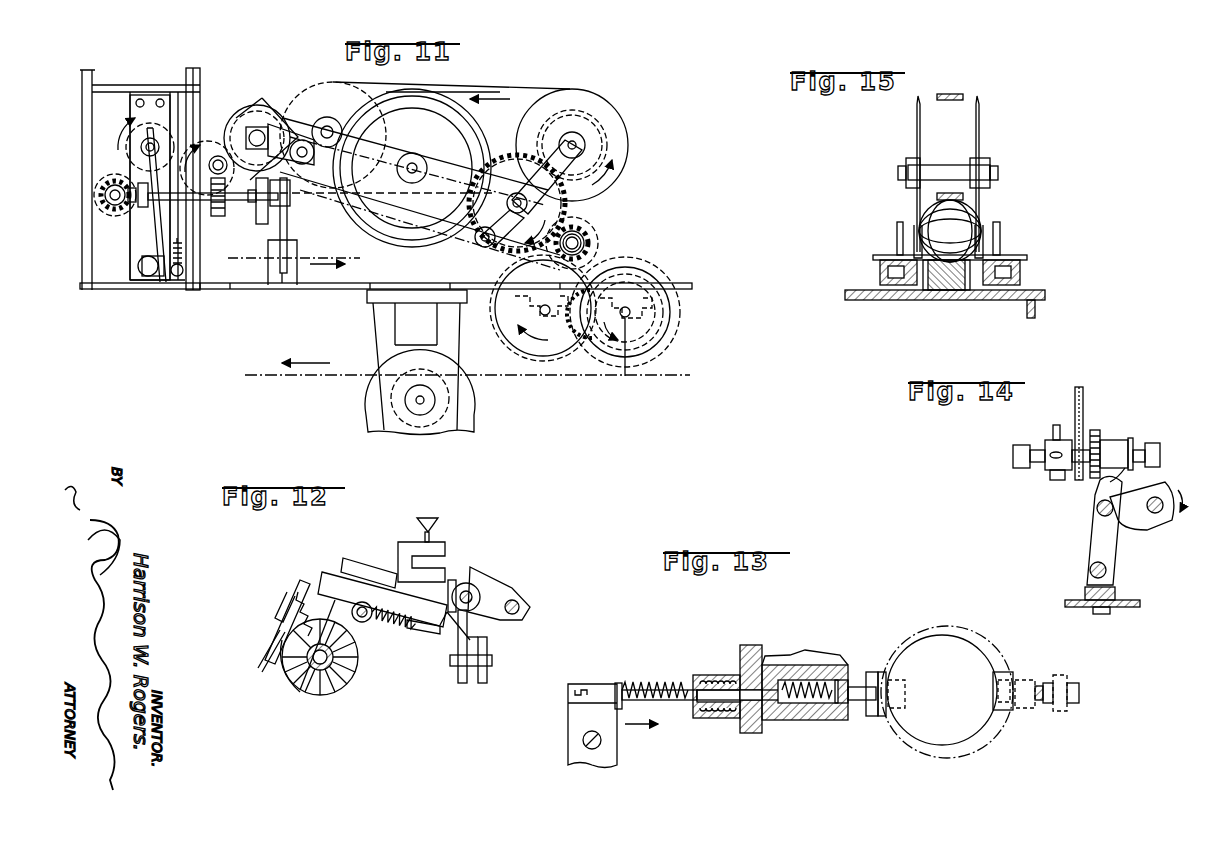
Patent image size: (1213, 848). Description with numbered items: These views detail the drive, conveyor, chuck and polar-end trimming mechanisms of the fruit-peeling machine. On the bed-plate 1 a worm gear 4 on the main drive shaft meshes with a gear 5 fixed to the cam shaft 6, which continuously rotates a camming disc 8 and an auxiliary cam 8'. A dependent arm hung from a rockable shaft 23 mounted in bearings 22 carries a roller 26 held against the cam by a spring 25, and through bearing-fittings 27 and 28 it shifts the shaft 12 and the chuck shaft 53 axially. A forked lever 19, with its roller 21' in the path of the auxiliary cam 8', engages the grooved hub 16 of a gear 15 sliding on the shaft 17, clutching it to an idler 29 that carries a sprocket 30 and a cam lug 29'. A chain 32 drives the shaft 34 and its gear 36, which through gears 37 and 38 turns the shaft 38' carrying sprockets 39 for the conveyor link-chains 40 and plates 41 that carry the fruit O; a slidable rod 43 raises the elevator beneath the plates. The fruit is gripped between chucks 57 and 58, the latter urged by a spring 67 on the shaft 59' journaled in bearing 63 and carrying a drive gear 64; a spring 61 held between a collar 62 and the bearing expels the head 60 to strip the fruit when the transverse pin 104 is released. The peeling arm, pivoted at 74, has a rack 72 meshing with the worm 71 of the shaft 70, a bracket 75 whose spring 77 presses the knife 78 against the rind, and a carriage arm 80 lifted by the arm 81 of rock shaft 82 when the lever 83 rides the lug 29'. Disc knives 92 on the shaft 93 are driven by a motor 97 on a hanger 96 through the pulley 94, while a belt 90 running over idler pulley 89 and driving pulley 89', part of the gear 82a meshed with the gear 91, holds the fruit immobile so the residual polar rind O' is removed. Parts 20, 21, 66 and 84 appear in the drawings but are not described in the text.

In FIG. 11, the bed-plate 1 is at (690, 286).
In FIG. 15, the bed-plate 1 is at (896, 300).
In FIG. 14, the bed-plate 1 is at (1132, 606).
In FIG. 11, the worm gear 4 is at (217, 156).
In FIG. 11, the gear 5 is at (218, 216).
In FIG. 14, the cam shaft 6 is at (1160, 502).
In FIG. 11, the camming disc 8 is at (156, 226).
In FIG. 11, the auxiliary cam 8' is at (271, 212).
In FIG. 14, the auxiliary cam 8' is at (1142, 517).
In FIG. 12, the auxiliary cam 8' is at (446, 689).
In FIG. 11, the shaft 12 is at (145, 142).
In FIG. 14, the gear 15 is at (1097, 432).
In FIG. 11, the grooved hub 16 is at (256, 128).
In FIG. 14, the grooved hub 16 is at (1114, 441).
In FIG. 12, the grooved hub 16 is at (470, 593).
In FIG. 14, the shaft 17 is at (1147, 444).
In FIG. 12, the shaft 17 is at (455, 595).
In FIG. 11, the forked lever 19 is at (288, 218).
In FIG. 14, the forked lever 19 is at (1092, 541).
In FIG. 12, the forked lever 19 is at (488, 648).
In FIG. 14, the pivot 20 is at (1113, 582).
In FIG. 12, the pin 21 is at (489, 667).
In FIG. 14, the roller 21' is at (1085, 518).
In FIG. 11, the bearing 22 is at (195, 70).
In FIG. 11, the rockable shaft 23 is at (128, 87).
In FIG. 11, the spring 25 is at (185, 270).
In FIG. 11, the roller 26 is at (142, 208).
In FIG. 11, the bearing-fitting 27 is at (130, 202).
In FIG. 11, the bearing-fitting 28 is at (292, 140).
In FIG. 14, the idler 29 is at (1042, 449).
In FIG. 14, the cam lug 29' is at (1060, 477).
In FIG. 14, the sprocket 30 is at (1084, 397).
In FIG. 11, the link belt 32 is at (428, 225).
In FIG. 11, the shaft 34 is at (580, 238).
In FIG. 11, the gear 36 is at (590, 240).
In FIG. 11, the gear 37 is at (498, 338).
In FIG. 11, the gear 38 is at (638, 312).
In FIG. 11, the shaft 38' is at (631, 357).
In FIG. 11, the sprockets 39 is at (672, 342).
In FIG. 15, the link-chains 40 is at (1014, 276).
In FIG. 15, the plates 41 is at (952, 262).
In FIG. 11, the rod 43 is at (146, 276).
In FIG. 11, the chuck shaft 53 is at (116, 176).
In FIG. 13, the chuck shaft 53 is at (1042, 704).
In FIG. 12, the chuck shaft 53 is at (332, 682).
In FIG. 13, the chuck 57 is at (1002, 672).
In FIG. 13, the chuck 58 is at (862, 672).
In FIG. 13, the shaft 59' is at (763, 675).
In FIG. 13, the head 60 is at (872, 718).
In FIG. 13, the spring 61 is at (797, 706).
In FIG. 13, the collar 62 is at (828, 721).
In FIG. 13, the bearing 63 is at (802, 665).
In FIG. 13, the drive gear 64 is at (748, 665).
In FIG. 13, the block 66 is at (712, 720).
In FIG. 13, the spring 67 is at (652, 686).
In FIG. 12, the shaft 70 is at (366, 603).
In FIG. 12, the worm 71 is at (362, 623).
In FIG. 12, the segmental gear 72 is at (392, 630).
In FIG. 12, the pivot 74 is at (440, 572).
In FIG. 12, the bracket 75 is at (322, 580).
In FIG. 12, the spring 77 is at (300, 585).
In FIG. 12, the knife 78 is at (306, 693).
In FIG. 12, the arm 80 is at (425, 634).
In FIG. 11, the arm 81 is at (252, 200).
In FIG. 12, the arm 81 is at (460, 640).
In FIG. 12, the rock shaft 82 is at (520, 608).
In FIG. 11, the gear 82a is at (570, 123).
In FIG. 11, the actuating lever 83 is at (275, 106).
In FIG. 14, the actuating lever 83 is at (1056, 428).
In FIG. 12, the actuating lever 83 is at (498, 580).
In FIG. 12, the arm 84 is at (514, 596).
In FIG. 11, the idler pulley 89 is at (333, 120).
In FIG. 11, the driving pulley 89' is at (593, 145).
In FIG. 11, the belt 90 is at (518, 88).
In FIG. 15, the belt 90 is at (953, 93).
In FIG. 11, the gear 91 is at (503, 155).
In FIG. 15, the circular knives 92 is at (976, 127).
In FIG. 11, the shaft 93 is at (400, 172).
In FIG. 15, the shaft 93 is at (950, 165).
In FIG. 11, the pulley 94 is at (452, 130).
In FIG. 11, the hanger 96 is at (417, 360).
In FIG. 11, the motor 97 is at (476, 397).
In FIG. 13, the transverse pin 104 is at (578, 697).
In FIG. 15, the fruit O is at (987, 215).
In FIG. 13, the fruit O is at (958, 678).
In FIG. 12, the fruit O is at (320, 727).
In FIG. 15, the polar rind section O' is at (931, 231).
In FIG. 13, the polar rind section O' is at (892, 740).